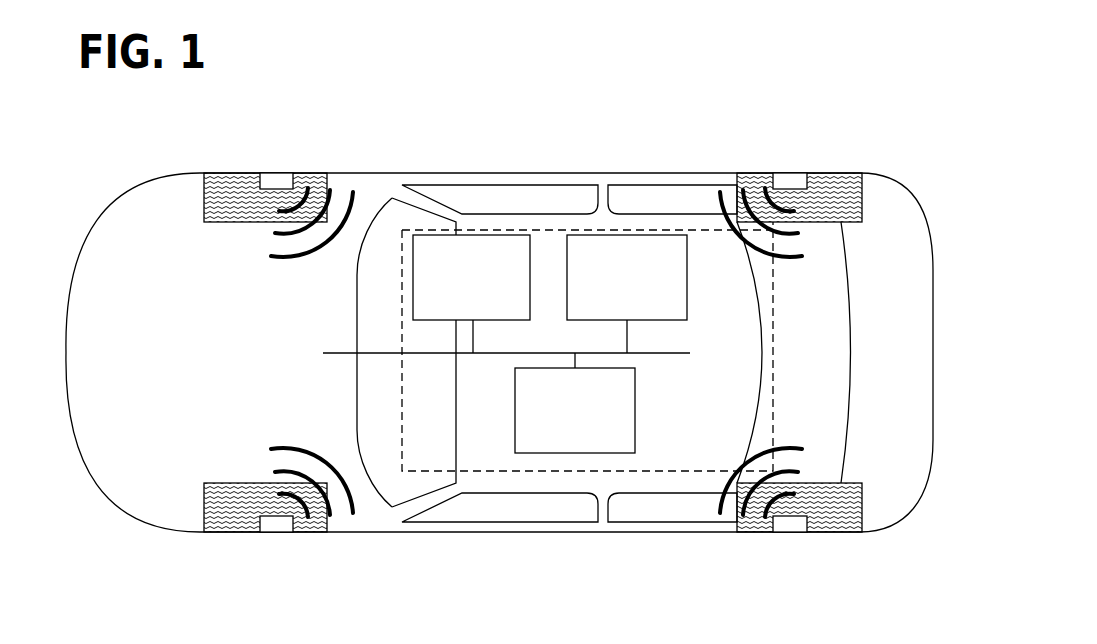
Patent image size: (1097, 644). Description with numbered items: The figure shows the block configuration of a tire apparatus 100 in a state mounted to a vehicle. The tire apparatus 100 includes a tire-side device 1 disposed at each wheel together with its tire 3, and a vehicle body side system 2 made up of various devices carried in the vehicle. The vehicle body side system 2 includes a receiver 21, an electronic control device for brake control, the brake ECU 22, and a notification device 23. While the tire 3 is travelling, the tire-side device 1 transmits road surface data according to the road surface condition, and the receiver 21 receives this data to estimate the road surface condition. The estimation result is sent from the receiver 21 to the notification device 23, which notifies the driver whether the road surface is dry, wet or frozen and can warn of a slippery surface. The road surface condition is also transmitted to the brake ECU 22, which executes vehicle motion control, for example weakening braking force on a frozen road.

The tire apparatus 100 is at (411, 145).
The tire-side device 1 is at (274, 182).
The vehicle body side system 2 is at (706, 230).
The tire 3 is at (204, 204).
The receiver 21 is at (575, 453).
The brake ECU 22 is at (640, 235).
The notification device 23 is at (490, 235).